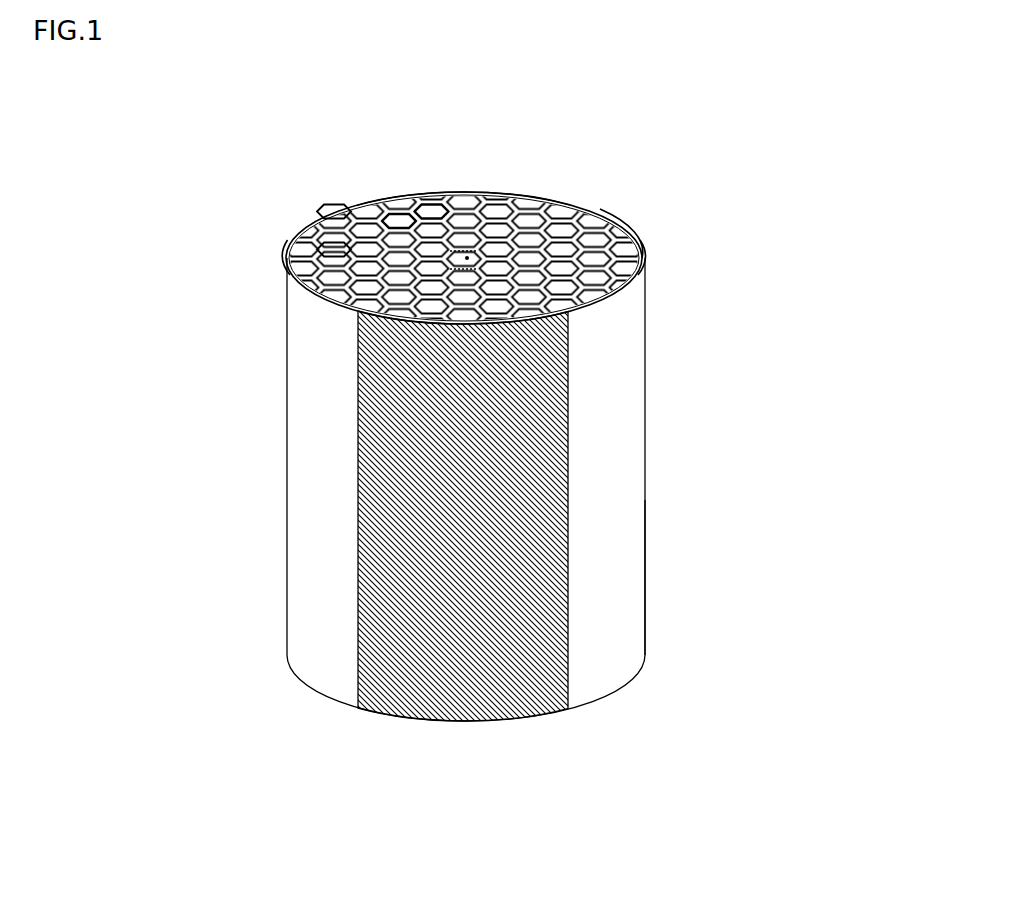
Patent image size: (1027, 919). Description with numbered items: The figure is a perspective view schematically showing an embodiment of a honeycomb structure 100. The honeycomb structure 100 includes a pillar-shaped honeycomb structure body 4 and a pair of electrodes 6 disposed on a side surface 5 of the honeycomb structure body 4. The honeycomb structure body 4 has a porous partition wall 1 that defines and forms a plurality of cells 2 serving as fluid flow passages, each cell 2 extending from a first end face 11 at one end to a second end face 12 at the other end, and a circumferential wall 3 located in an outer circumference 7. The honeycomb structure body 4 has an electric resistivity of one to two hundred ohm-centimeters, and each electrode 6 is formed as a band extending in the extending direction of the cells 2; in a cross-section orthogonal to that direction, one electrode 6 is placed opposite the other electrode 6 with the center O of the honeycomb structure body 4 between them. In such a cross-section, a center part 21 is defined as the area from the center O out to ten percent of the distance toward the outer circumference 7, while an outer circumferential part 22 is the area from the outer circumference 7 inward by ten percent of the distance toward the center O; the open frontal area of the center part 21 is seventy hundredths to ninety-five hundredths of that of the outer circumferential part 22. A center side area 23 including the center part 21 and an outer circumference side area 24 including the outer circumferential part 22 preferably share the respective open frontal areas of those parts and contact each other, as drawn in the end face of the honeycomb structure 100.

The honeycomb structure 100 is at (722, 102).
The partition wall 1 is at (607, 222).
The cell 2 is at (337, 250).
The second end face 12 is at (327, 215).
The center part 21 is at (288, 250).
The outer circumferential part 22 is at (647, 252).
The center side area 23 is at (445, 188).
The outer circumference side area 24 is at (393, 225).
The circumferential wall 3 is at (632, 395).
The honeycomb structure body 4 is at (641, 307).
The side surface 5 is at (627, 468).
The electrode 6 is at (516, 183).
The outer circumference 7 is at (632, 537).
The first end face 11 is at (595, 700).
The center O is at (478, 244).